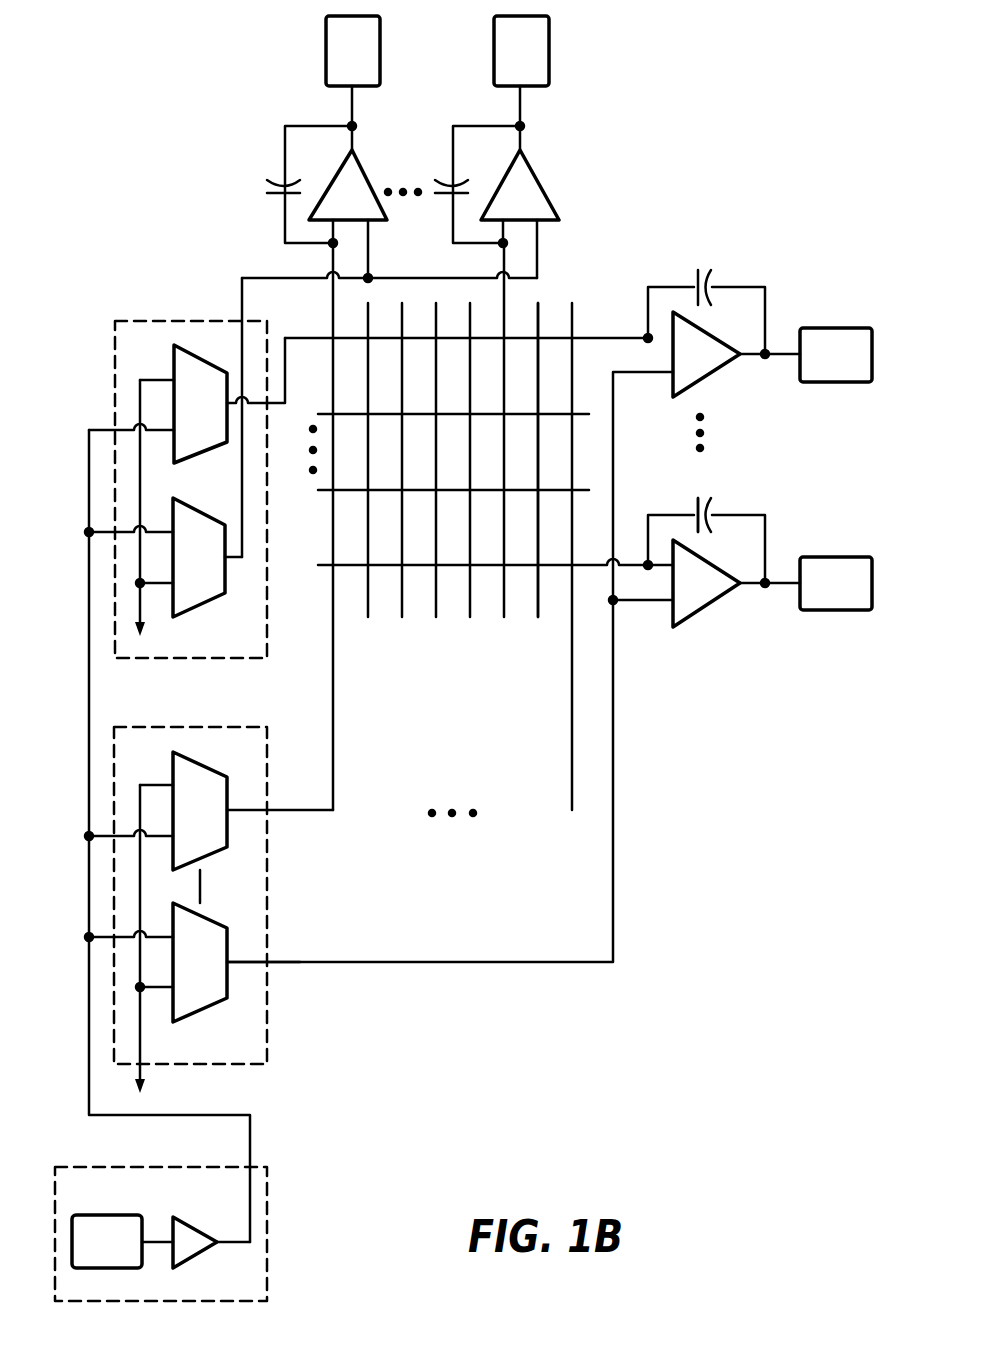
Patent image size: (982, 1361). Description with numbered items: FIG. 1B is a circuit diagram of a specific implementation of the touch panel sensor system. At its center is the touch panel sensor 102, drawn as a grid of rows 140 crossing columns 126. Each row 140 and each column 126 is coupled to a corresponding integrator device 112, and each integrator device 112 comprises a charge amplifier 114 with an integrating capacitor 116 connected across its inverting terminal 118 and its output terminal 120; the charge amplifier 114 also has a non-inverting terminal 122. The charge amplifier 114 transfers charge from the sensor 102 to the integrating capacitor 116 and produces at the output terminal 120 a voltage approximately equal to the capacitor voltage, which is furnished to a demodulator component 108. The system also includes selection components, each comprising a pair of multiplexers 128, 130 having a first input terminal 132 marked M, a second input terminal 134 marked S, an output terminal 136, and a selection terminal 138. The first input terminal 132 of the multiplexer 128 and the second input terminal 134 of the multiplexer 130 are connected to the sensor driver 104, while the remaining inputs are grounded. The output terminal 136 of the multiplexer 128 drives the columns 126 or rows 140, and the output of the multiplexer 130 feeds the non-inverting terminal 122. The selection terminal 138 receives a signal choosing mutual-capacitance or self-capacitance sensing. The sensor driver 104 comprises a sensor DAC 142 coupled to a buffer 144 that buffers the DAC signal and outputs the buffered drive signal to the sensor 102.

The touch panel sensor 102 is at (417, 627).
The sensor driver 104 is at (161, 1216).
The demodulator component 108 is at (380, 60).
The integrator device 112 is at (268, 136).
The charge amplifier 114 is at (722, 371).
The integrating capacitor 116 is at (696, 500).
The inverting terminal 118 is at (664, 565).
The output terminal 120 is at (722, 599).
The non-inverting terminal 122 is at (665, 600).
The column 126 is at (541, 313).
The multiplexer 128 is at (200, 767).
The multiplexer 130 is at (190, 1020).
The first input terminal 132 is at (150, 835).
The second input terminal 134 is at (150, 783).
The output terminal 136 is at (233, 962).
The selection terminal 138 is at (203, 862).
The row 140 is at (578, 337).
The DAC 142 is at (90, 1215).
The sensor DAC 144 is at (193, 1257).